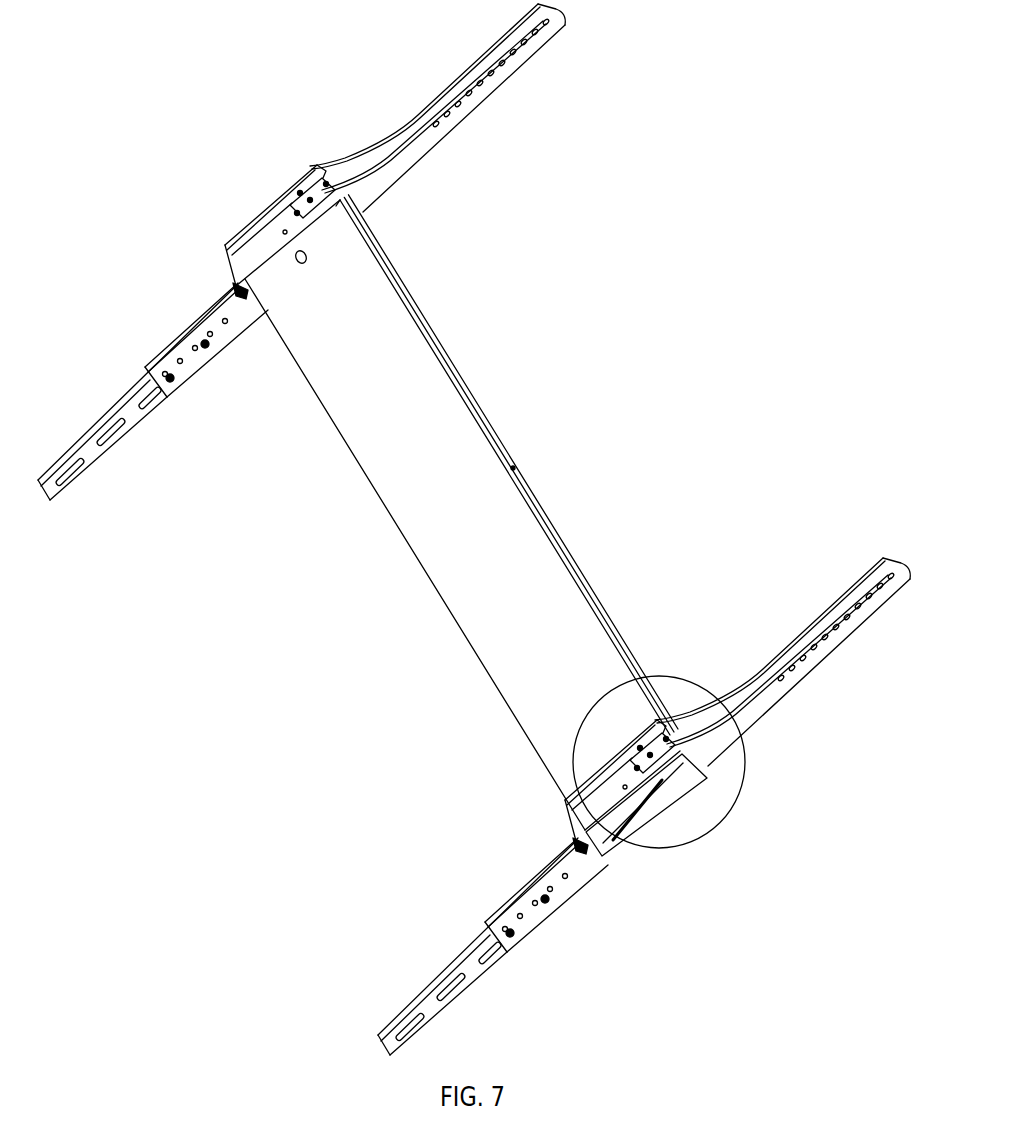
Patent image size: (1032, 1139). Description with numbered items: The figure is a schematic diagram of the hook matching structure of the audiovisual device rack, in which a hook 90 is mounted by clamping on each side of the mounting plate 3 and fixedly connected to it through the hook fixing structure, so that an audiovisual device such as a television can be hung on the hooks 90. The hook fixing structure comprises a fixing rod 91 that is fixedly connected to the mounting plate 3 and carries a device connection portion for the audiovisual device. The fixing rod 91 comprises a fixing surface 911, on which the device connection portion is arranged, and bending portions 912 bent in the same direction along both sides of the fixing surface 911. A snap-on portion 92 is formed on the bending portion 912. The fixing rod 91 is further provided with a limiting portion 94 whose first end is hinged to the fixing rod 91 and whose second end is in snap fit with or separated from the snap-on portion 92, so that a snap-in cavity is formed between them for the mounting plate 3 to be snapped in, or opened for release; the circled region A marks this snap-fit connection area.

The mounting plate 3 is at (475, 542).
The hook 90 is at (478, 120).
The fixing rod 91 is at (782, 616).
The fixing surface 911 is at (770, 497).
The bending portion 912 is at (778, 658).
The snap-on portion 92 is at (705, 743).
The limiting portion 94 is at (582, 830).
The detail region A is at (747, 768).